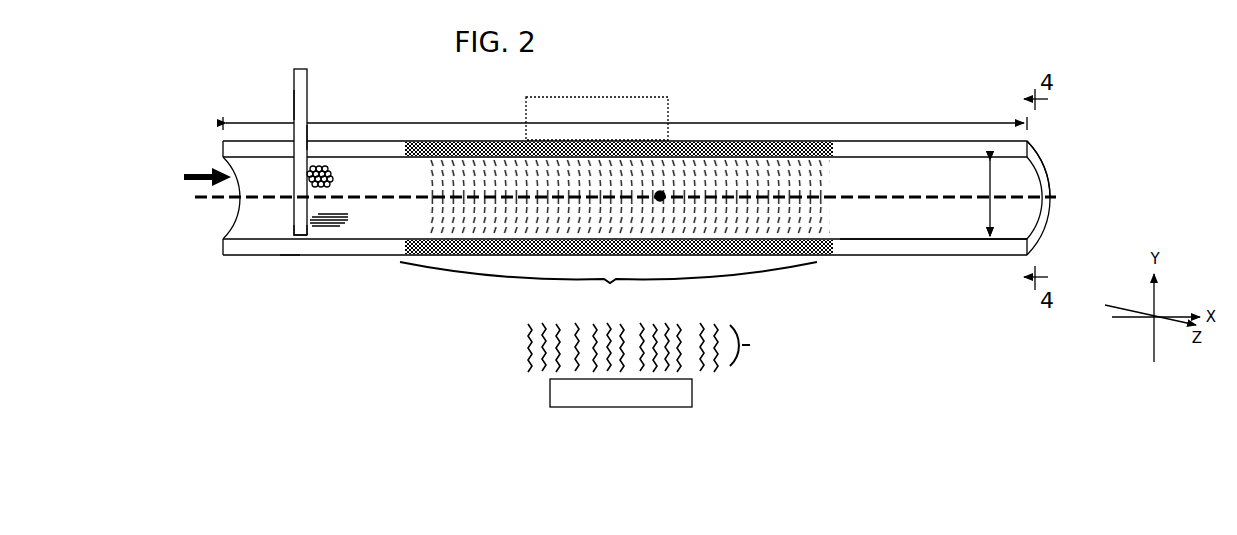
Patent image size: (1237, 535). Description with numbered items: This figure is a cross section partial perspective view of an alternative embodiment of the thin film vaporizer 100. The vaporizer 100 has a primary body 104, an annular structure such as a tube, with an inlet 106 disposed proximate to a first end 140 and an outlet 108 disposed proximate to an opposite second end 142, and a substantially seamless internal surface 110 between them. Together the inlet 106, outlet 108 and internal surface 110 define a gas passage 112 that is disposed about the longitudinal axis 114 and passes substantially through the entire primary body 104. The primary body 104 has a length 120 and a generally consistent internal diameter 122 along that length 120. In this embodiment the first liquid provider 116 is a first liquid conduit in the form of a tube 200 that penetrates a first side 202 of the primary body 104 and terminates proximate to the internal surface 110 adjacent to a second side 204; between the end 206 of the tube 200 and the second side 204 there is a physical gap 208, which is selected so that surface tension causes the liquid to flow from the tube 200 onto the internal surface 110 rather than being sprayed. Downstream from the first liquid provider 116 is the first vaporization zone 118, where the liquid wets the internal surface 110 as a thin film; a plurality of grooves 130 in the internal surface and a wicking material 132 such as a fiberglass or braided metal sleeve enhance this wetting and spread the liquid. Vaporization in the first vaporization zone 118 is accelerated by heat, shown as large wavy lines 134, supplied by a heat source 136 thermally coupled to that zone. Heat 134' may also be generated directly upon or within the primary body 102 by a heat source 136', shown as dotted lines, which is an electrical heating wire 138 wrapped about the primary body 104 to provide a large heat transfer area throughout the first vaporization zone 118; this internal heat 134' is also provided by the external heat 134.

The vaporizer 100 is at (920, 97).
The primary body 102 is at (660, 194).
The primary body 104 is at (876, 139).
The inlet 106 is at (221, 226).
The outlet 108 is at (1027, 225).
The internal surface 110 is at (937, 231).
The gas passage 112 is at (959, 198).
The longitudinal axis 114 is at (608, 197).
The first liquid provider 116 is at (304, 65).
The first vaporization zone 118 is at (608, 282).
The length 120 is at (807, 112).
The internal diameter 122 is at (971, 198).
The grooves 130 is at (349, 221).
The wicking material 132 is at (334, 174).
The heat 134 is at (655, 347).
The heat 134' is at (637, 122).
The heat source 136 is at (621, 393).
The heat source 136' is at (597, 118).
The electrical heating wire 138 is at (443, 165).
The first end 140 is at (223, 150).
The second end 142 is at (1037, 150).
The tube 200 is at (302, 105).
The first side 202 is at (311, 141).
The second side 204 is at (285, 256).
The end 206 is at (305, 236).
The gap 208 is at (290, 236).